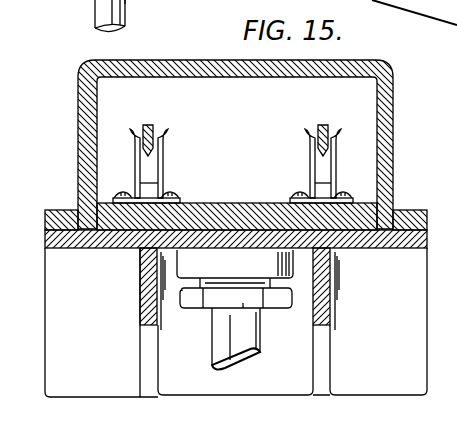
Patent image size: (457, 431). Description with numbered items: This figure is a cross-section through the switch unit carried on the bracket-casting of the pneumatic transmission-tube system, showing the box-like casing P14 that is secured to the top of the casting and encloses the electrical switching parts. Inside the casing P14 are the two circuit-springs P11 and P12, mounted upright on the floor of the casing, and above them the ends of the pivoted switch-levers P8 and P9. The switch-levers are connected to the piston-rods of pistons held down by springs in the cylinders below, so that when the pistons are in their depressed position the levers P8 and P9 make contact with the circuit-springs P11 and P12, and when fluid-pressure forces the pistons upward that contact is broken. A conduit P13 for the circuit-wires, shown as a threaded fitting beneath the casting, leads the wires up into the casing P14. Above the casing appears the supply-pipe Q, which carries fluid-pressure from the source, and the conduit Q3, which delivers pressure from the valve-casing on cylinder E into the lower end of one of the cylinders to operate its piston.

The supply-pipe Q is at (108, 32).
The conduit Q3 is at (137, 7).
The box-like casing P14 is at (235, 144).
The circuit-spring P11 is at (163, 160).
The circuit-spring P12 is at (337, 171).
The pivoted switch-lever P8 is at (151, 126).
The pivoted switch-lever P9 is at (327, 127).
The conduit for the circuit-wires P13 is at (250, 335).